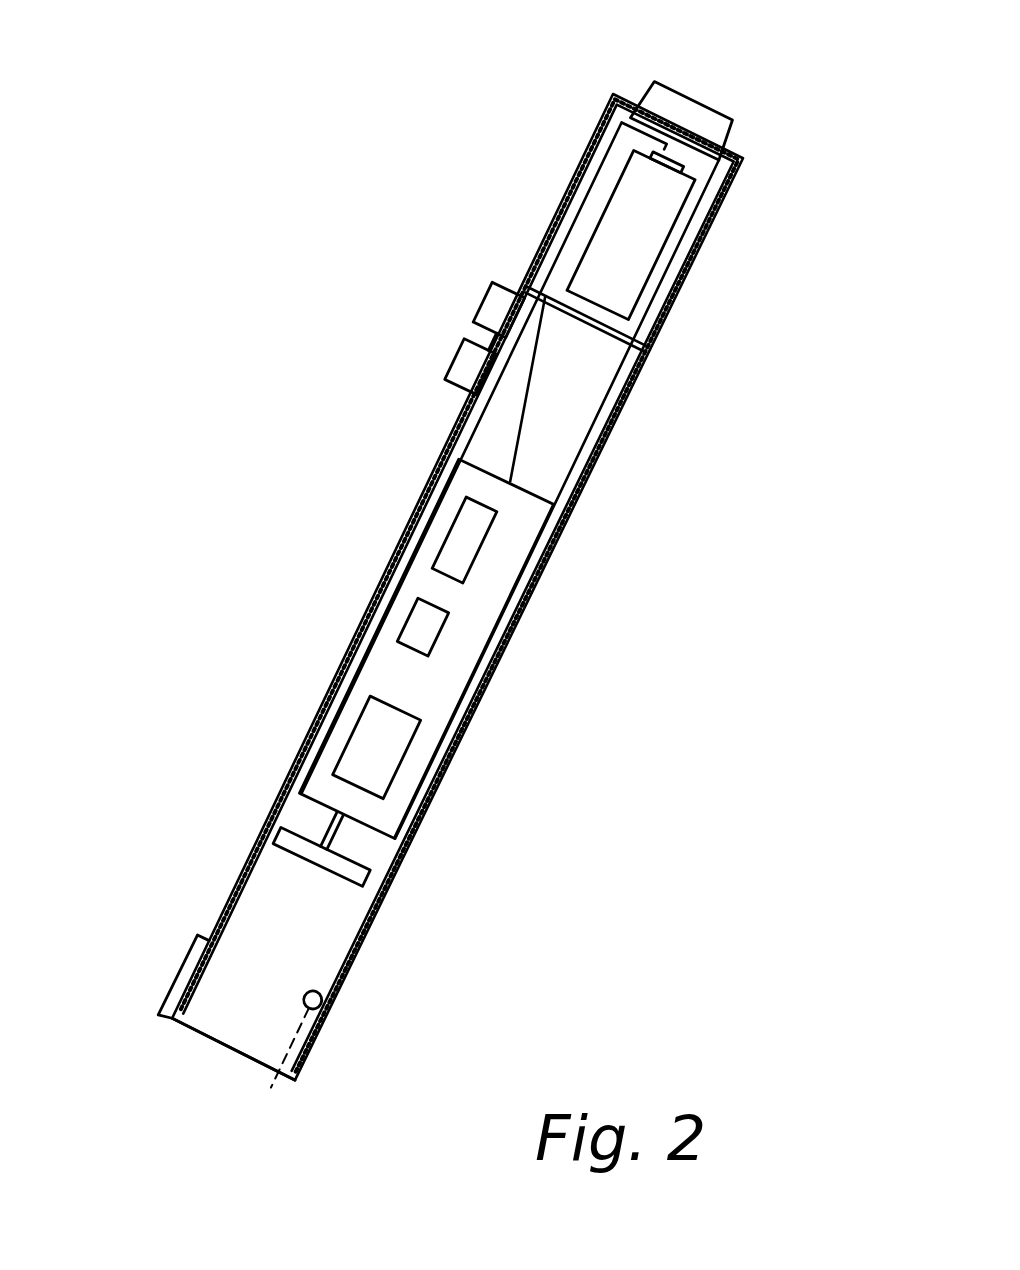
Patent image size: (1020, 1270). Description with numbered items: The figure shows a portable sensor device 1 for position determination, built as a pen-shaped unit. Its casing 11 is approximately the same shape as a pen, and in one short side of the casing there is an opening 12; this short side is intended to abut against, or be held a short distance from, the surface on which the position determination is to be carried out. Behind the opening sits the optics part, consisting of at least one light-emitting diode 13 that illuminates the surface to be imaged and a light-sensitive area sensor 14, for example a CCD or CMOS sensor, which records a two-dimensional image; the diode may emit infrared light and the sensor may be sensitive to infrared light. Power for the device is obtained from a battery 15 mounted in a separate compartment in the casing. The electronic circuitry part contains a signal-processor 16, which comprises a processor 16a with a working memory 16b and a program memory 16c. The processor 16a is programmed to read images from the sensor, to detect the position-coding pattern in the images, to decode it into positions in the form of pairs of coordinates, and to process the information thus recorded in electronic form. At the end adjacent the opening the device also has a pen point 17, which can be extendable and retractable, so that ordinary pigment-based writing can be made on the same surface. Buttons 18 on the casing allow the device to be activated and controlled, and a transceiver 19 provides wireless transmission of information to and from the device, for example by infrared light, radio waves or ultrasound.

The sensor device 1 is at (405, 557).
The casing 11 is at (562, 546).
The opening 12 is at (220, 1045).
The light-emitting diode 13 is at (333, 1005).
The light-sensitive area sensor 14 is at (360, 863).
The battery 15 is at (632, 252).
The signal-processor 16 is at (425, 695).
The processor 16a is at (403, 762).
The working memory 16b is at (443, 624).
The program memory 16c is at (487, 542).
The pen point 17 is at (185, 962).
The buttons 18 is at (488, 310).
The transceiver 19 is at (688, 104).